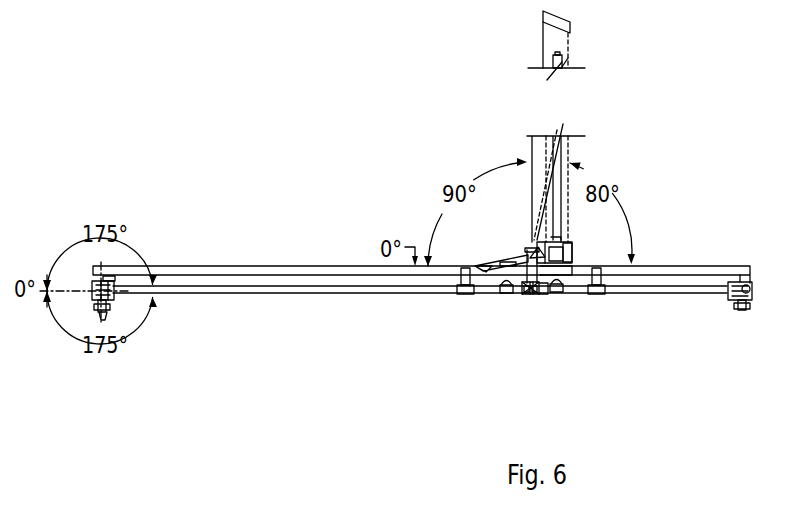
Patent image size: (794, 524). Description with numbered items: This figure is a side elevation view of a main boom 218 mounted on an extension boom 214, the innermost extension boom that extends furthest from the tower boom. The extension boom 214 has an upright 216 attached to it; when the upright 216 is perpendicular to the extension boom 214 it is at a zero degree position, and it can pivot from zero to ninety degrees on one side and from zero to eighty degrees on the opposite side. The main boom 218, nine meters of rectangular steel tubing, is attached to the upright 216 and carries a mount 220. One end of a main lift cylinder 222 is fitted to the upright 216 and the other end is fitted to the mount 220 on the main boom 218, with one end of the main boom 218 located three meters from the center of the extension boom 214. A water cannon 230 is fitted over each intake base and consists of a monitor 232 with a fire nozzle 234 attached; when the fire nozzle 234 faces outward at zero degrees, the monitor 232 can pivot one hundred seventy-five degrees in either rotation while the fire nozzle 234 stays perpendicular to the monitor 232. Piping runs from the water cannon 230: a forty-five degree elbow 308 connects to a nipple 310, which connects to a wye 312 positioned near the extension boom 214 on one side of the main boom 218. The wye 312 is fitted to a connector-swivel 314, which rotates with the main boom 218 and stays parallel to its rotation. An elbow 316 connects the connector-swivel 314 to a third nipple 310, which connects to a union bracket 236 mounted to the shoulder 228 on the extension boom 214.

The extension boom 214 is at (562, 147).
The upright 216 is at (508, 286).
The main boom 218 is at (293, 273).
The mount 220 is at (480, 266).
The main lift cylinder 222 is at (510, 262).
The shoulder 228 is at (567, 240).
The water cannon 230 is at (93, 284).
The monitor 232 is at (113, 281).
The fire nozzle 234 is at (107, 302).
The union bracket 236 is at (573, 251).
The 45° elbow 308 is at (523, 290).
The nipple 310 is at (527, 293).
The wye 312 is at (532, 294).
The connector-swivel 314 is at (545, 286).
The elbow 316 is at (553, 272).